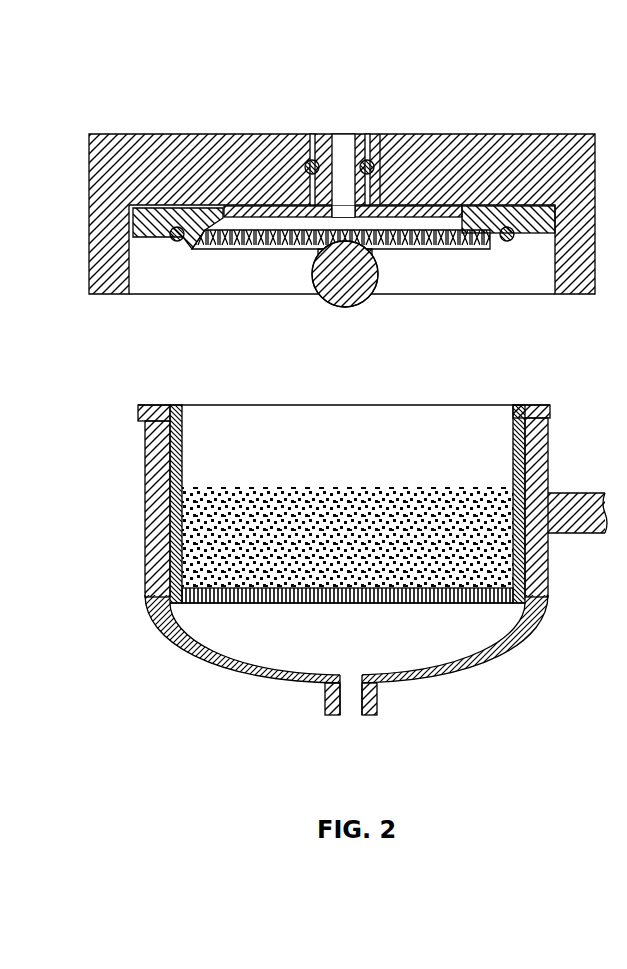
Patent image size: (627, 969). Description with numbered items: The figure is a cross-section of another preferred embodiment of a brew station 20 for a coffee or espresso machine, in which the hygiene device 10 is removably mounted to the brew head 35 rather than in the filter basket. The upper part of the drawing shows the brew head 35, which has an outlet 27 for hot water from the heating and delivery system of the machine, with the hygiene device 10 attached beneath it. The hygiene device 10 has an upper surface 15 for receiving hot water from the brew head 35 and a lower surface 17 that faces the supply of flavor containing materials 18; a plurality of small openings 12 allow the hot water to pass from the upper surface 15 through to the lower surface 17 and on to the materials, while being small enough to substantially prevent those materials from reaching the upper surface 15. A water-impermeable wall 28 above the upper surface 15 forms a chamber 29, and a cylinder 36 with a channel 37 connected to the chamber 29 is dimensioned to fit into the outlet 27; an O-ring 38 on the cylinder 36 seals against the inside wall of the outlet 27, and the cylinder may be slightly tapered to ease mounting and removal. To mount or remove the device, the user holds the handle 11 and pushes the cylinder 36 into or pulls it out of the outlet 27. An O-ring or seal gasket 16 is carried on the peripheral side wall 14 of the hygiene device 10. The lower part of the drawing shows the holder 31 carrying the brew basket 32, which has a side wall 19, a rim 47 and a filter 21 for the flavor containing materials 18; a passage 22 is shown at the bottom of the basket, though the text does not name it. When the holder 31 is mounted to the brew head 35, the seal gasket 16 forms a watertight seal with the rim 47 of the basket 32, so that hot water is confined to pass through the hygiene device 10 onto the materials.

The hygiene device 10 is at (303, 288).
The handle 11 is at (367, 303).
The small openings 12 is at (420, 250).
The peripheral side wall 14 is at (190, 250).
The upper surface 15 is at (250, 232).
The O-ring 16 is at (170, 239).
The lower surface 17 is at (250, 218).
The flavor containing materials 18 is at (192, 510).
The side wall 19 is at (170, 548).
The brew station 20 is at (149, 97).
The filter 21 is at (320, 604).
The outlet 22 is at (355, 700).
The outlet 27 is at (308, 134).
The water-impermeable wall 28 is at (415, 206).
The chamber 29 is at (452, 206).
The holder 31 is at (562, 643).
The brew basket 32 is at (205, 612).
The brew head 35 is at (523, 120).
The cylinder 36 is at (313, 134).
The channel 37 is at (340, 145).
The O-ring 38 is at (385, 134).
The rim 47 is at (540, 405).